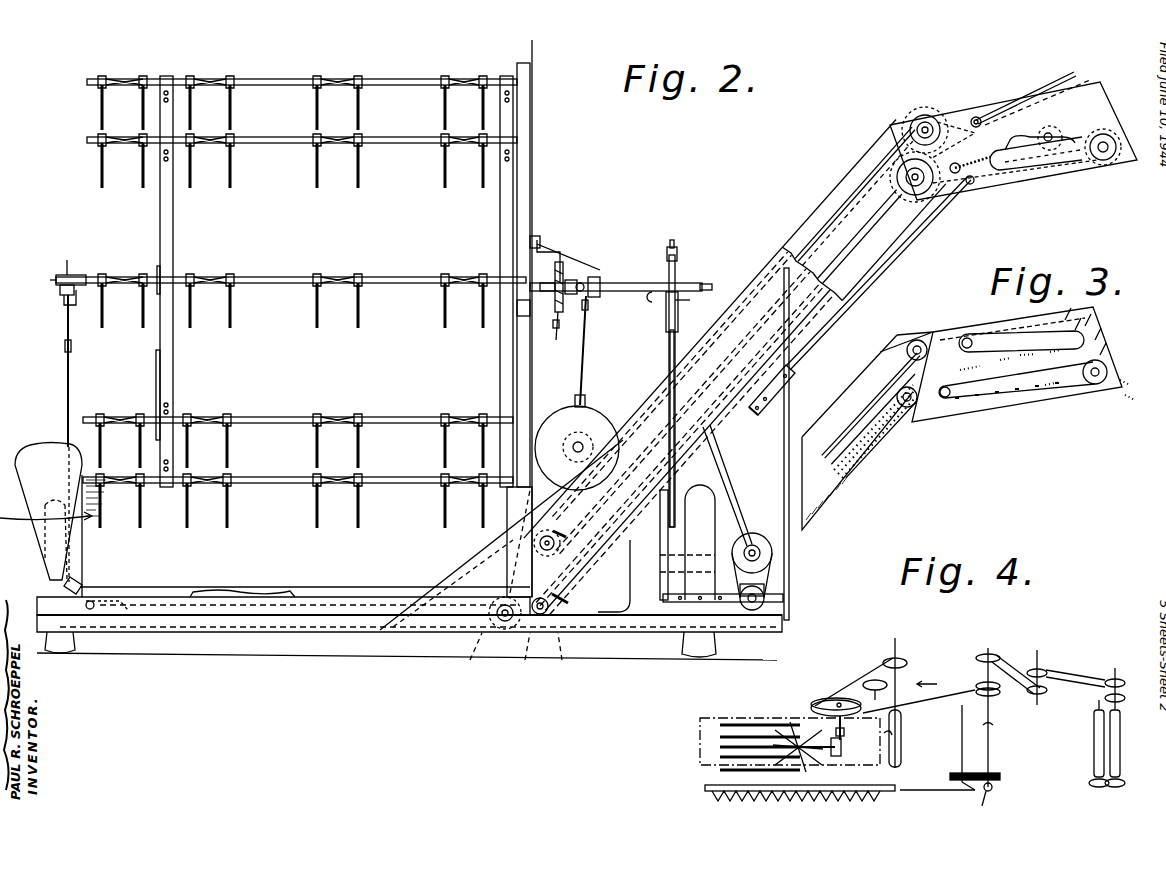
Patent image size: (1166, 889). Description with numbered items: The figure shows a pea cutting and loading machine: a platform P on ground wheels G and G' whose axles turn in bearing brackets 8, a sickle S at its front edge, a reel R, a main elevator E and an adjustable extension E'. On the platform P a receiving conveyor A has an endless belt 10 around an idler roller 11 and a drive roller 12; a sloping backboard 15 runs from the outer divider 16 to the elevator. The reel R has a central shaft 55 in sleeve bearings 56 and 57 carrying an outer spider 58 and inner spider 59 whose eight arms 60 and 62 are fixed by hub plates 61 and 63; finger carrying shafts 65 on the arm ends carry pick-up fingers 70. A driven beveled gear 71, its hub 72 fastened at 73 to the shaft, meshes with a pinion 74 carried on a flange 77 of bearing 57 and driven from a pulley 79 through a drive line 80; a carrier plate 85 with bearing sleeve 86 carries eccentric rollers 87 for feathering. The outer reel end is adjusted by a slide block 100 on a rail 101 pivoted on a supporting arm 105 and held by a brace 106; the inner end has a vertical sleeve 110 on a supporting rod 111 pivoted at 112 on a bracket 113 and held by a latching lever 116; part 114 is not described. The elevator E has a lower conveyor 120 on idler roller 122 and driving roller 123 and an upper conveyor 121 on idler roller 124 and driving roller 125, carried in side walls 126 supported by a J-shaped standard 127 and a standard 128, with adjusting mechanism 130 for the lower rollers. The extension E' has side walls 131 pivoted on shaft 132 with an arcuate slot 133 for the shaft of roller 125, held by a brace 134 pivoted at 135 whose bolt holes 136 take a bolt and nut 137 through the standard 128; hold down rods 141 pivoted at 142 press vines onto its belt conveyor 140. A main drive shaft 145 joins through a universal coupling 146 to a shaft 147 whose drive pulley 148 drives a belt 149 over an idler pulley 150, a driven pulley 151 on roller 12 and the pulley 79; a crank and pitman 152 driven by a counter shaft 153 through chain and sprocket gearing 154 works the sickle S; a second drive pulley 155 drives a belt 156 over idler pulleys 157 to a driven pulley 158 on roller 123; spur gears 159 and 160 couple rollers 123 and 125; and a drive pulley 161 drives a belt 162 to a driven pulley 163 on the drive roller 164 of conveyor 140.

In FIG. 2, the bearing brackets 8 is at (565, 48).
In FIG. 2, the endless belt 10 is at (275, 610).
In FIG. 2, the idler roller 11 is at (128, 598).
In FIG. 2, the drive roller 12 is at (468, 656).
In FIG. 2, the sloping backboard 15 is at (176, 536).
In FIG. 2, the outer divider 16 is at (52, 455).
In FIG. 2, the central shaft 55 is at (702, 283).
In FIG. 2, the sleeve bearing 56 is at (84, 275).
In FIG. 2, the sleeve bearing 57 is at (645, 283).
In FIG. 2, the outer spider 58 is at (172, 224).
In FIG. 2, the inner spider 59 is at (500, 198).
In FIG. 2, the radiating arms 60 is at (170, 372).
In FIG. 2, the hub plate 61 is at (162, 268).
In FIG. 2, the radiating arms 62 is at (502, 236).
In FIG. 2, the hub plate 63 is at (502, 312).
In FIG. 2, the finger carrying shafts 65 is at (312, 78).
In FIG. 2, the pick-up fingers 70 is at (443, 108).
In FIG. 2, the driven beveled gear 71 is at (572, 280).
In FIG. 4, the driven beveled gear 71 is at (837, 732).
In FIG. 2, the hub 72 is at (562, 324).
In FIG. 2, the fastening 73 is at (576, 284).
In FIG. 2, the beveled driving pinion 74 is at (565, 268).
In FIG. 4, the beveled driving pinion 74 is at (843, 750).
In FIG. 2, the flange 77 is at (596, 277).
In FIG. 2, the pulley 79 is at (590, 418).
In FIG. 4, the pulley 79 is at (830, 700).
In FIG. 2, the drive line 80 is at (580, 360).
In FIG. 4, the drive line 80 is at (845, 733).
In FIG. 2, the carrier plate 85 is at (540, 258).
In FIG. 2, the bearing sleeve 86 is at (550, 292).
In FIG. 2, the double flanged rollers 87 is at (535, 236).
In FIG. 2, the slide block 100 is at (60, 290).
In FIG. 2, the supporting rail 101 is at (64, 300).
In FIG. 2, the supporting arm 105 is at (70, 374).
In FIG. 2, the brace element 106 is at (65, 346).
In FIG. 2, the vertical sleeve 110 is at (666, 322).
In FIG. 2, the supporting rod 111 is at (668, 340).
In FIG. 2, the pivot 112 is at (672, 518).
In FIG. 2, the supporting bracket 113 is at (670, 541).
In FIG. 2, the collar pin 114 is at (660, 297).
In FIG. 2, the latching lever 116 is at (674, 247).
In FIG. 2, the lower conveyor 120 is at (870, 283).
In FIG. 3, the lower conveyor 120 is at (848, 488).
In FIG. 2, the upper conveyor 121 is at (830, 207).
In FIG. 3, the upper conveyor 121 is at (868, 385).
In FIG. 2, the lower idler roller 122 is at (565, 656).
In FIG. 2, the upper driving roller 123 is at (943, 207).
In FIG. 3, the upper driving roller 123 is at (906, 408).
In FIG. 4, the upper driving roller 123 is at (1110, 724).
In FIG. 2, the lower idler roller 124 is at (546, 535).
In FIG. 2, the upper driving roller 125 is at (915, 115).
In FIG. 3, the upper driving roller 125 is at (920, 340).
In FIG. 4, the upper driving roller 125 is at (1094, 741).
In FIG. 2, the side walls 126 is at (758, 272).
In FIG. 2, the J-shaped standard 127 is at (630, 577).
In FIG. 2, the standard 128 is at (790, 534).
In FIG. 2, the adjusting mechanism 130 is at (570, 598).
In FIG. 3, the side walls 131 is at (1088, 316).
In FIG. 3, the shaft 132 is at (912, 406).
In FIG. 3, the arcuate slot 133 is at (908, 340).
In FIG. 2, the brace 134 is at (905, 258).
In FIG. 2, the pivotal connection 135 is at (974, 183).
In FIG. 2, the bolt holes 136 is at (795, 372).
In FIG. 2, the bolt and nut 137 is at (784, 383).
In FIG. 3, the endless belt conveyor 140 is at (1055, 390).
In FIG. 2, the hold down rods 141 is at (1072, 74).
In FIG. 3, the hold down rods 141 is at (1030, 340).
In FIG. 2, the pivot 142 is at (977, 117).
In FIG. 3, the pivot 142 is at (975, 340).
In FIG. 4, the main drive shaft 145 is at (988, 797).
In FIG. 4, the universal coupling 146 is at (993, 785).
In FIG. 2, the shaft 147 is at (760, 553).
In FIG. 4, the shaft 147 is at (992, 757).
In FIG. 4, the drive pulley 148 is at (996, 692).
In FIG. 2, the belt 149 is at (723, 603).
In FIG. 4, the belt 149 is at (912, 705).
In FIG. 2, the idler pulley 150 is at (728, 430).
In FIG. 4, the idler pulley 150 is at (890, 684).
In FIG. 2, the driven pulley 151 is at (522, 656).
In FIG. 4, the driven pulley 151 is at (905, 662).
In FIG. 4, the crank and pitman 152 is at (968, 792).
In FIG. 2, the counter shaft 153 is at (760, 602).
In FIG. 4, the counter shaft 153 is at (962, 731).
In FIG. 2, the chain and sprocket gearing 154 is at (770, 590).
In FIG. 4, the chain and sprocket gearing 154 is at (950, 776).
In FIG. 4, the second drive pulley 155 is at (1000, 650).
In FIG. 4, the belt 156 is at (1070, 675).
In FIG. 4, the idler pulleys 157 is at (1042, 668).
In FIG. 4, the driven pulley 158 is at (1128, 666).
In FIG. 2, the spur gear 159 is at (958, 175).
In FIG. 4, the spur gear 159 is at (1115, 788).
In FIG. 2, the spur gear 160 is at (925, 108).
In FIG. 4, the spur gear 160 is at (1092, 787).
In FIG. 4, the drive pulley 161 is at (1105, 697).
In FIG. 2, the belt 162 is at (1066, 170).
In FIG. 2, the driven pulley 163 is at (1110, 135).
In FIG. 2, the drive roller 164 is at (1105, 166).
In FIG. 2, the receiving conveyor A is at (278, 614).
In FIG. 4, the receiving conveyor A is at (700, 745).
In FIG. 2, the main elevator E is at (794, 203).
In FIG. 3, the main elevator E is at (835, 387).
In FIG. 2, the adjustable elevator extension E' is at (1013, 132).
In FIG. 3, the adjustable elevator extension E' is at (1017, 374).
In FIG. 2, the inner ground wheel G is at (688, 661).
In FIG. 2, the outer ground wheel G' is at (407, 659).
In FIG. 2, the platform P is at (355, 612).
In FIG. 2, the reel R is at (376, 72).
In FIG. 4, the reel R is at (745, 718).
In FIG. 4, the sickle S is at (705, 788).